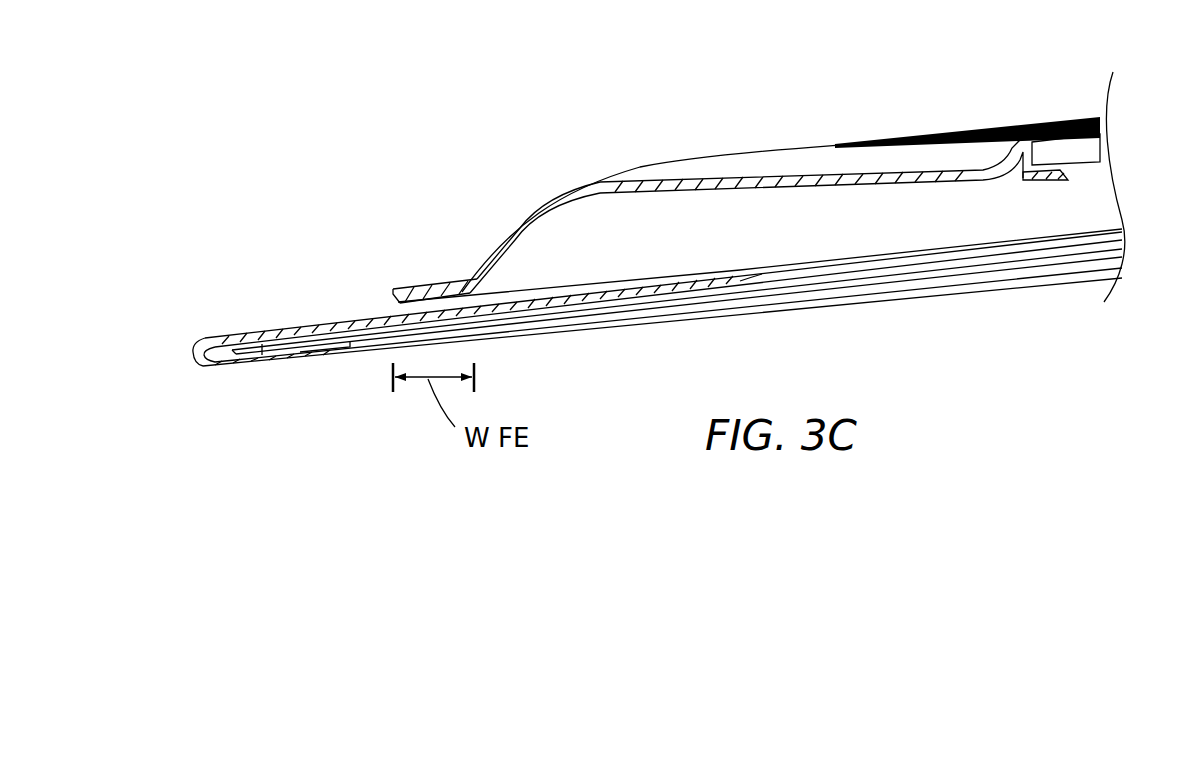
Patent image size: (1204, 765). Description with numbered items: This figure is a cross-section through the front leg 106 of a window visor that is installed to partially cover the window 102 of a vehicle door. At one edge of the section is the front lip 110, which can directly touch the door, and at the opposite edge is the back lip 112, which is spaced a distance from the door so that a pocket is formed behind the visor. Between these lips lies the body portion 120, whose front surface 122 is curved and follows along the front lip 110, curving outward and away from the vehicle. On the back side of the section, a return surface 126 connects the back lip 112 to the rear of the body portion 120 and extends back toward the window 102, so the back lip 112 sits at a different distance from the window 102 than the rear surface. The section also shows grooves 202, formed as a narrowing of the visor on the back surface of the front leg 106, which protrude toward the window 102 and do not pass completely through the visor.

The window 102 is at (260, 347).
The front leg 106 is at (582, 96).
The front lip 110 is at (440, 283).
The back lip 112 is at (1063, 173).
The body portion 120 is at (672, 140).
The front surface 122 is at (546, 196).
The return surface 126 is at (1055, 152).
The grooves 202 is at (833, 153).